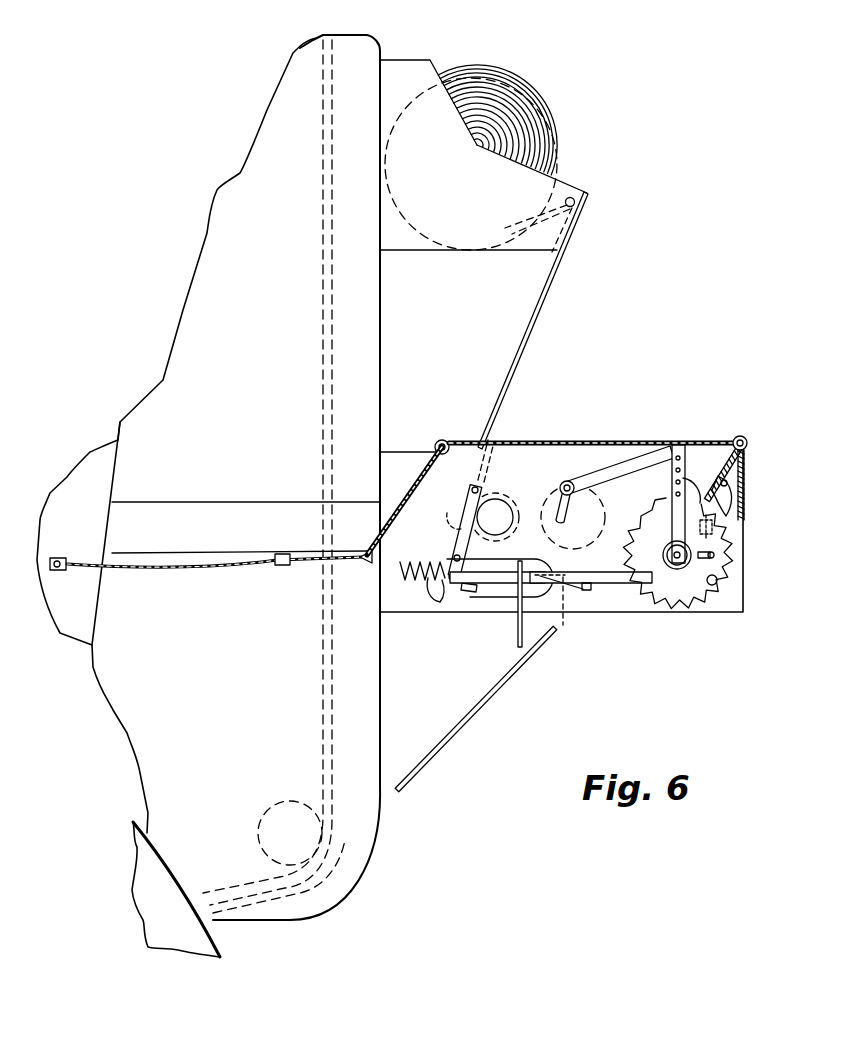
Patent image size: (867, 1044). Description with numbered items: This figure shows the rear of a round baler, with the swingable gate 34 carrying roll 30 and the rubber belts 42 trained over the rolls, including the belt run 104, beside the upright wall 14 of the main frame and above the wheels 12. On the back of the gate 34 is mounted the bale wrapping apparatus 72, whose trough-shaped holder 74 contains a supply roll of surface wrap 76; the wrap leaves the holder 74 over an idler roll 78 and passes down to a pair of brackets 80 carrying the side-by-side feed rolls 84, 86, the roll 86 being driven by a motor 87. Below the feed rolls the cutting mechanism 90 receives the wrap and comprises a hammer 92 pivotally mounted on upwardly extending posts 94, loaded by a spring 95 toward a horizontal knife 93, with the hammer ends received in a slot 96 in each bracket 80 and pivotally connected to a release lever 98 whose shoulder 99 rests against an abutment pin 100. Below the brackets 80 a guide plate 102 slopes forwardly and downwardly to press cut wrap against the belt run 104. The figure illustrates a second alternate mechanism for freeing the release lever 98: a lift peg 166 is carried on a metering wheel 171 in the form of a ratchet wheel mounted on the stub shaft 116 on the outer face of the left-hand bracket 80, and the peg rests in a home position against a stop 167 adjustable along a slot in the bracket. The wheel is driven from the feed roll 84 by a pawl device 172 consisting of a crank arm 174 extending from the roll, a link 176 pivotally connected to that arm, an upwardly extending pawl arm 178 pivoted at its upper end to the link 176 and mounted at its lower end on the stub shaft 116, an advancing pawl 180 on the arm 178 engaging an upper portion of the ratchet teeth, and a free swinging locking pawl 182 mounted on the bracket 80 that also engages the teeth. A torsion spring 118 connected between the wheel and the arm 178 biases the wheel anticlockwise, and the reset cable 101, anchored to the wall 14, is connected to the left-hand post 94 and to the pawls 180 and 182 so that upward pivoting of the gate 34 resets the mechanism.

The wheels 12 is at (190, 947).
The upright fore-and-aft extending wall 14 is at (78, 523).
The roll 30 is at (292, 803).
The swingable gate 34 is at (236, 675).
The rubber belts 42 is at (322, 306).
The bale wrapping apparatus 72 is at (623, 178).
The trough-shaped holder 74 is at (406, 236).
The surface wrap 76 is at (520, 100).
The idler roll 78 is at (574, 196).
The brackets 80 is at (398, 470).
The feed roll 84 is at (568, 440).
The feed roll 86 is at (460, 540).
The motor 87 is at (494, 508).
The cutting mechanism 90 is at (507, 628).
The hammer 92 is at (478, 590).
The horizontal knife 93 is at (566, 627).
The posts 94 is at (456, 522).
The spring 95 is at (422, 585).
The slot 96 is at (438, 606).
The release lever 98 is at (636, 540).
The shoulder 99 is at (588, 592).
The abutment pin 100 is at (628, 588).
The reset cable 101 is at (203, 566).
The guide plate 102 is at (432, 776).
The belt run 104 is at (250, 878).
The stub shaft 116 is at (708, 596).
The torsion spring 118 is at (720, 560).
The lift peg 166 is at (725, 588).
The stop 167 is at (718, 531).
The metering wheel 171 is at (694, 612).
The pawl device 172 is at (650, 445).
The crank arm 174 is at (573, 518).
The link 176 is at (606, 448).
The pawl arm 178 is at (746, 505).
The advancing pawl 180 is at (701, 447).
The locking pawl 182 is at (746, 438).